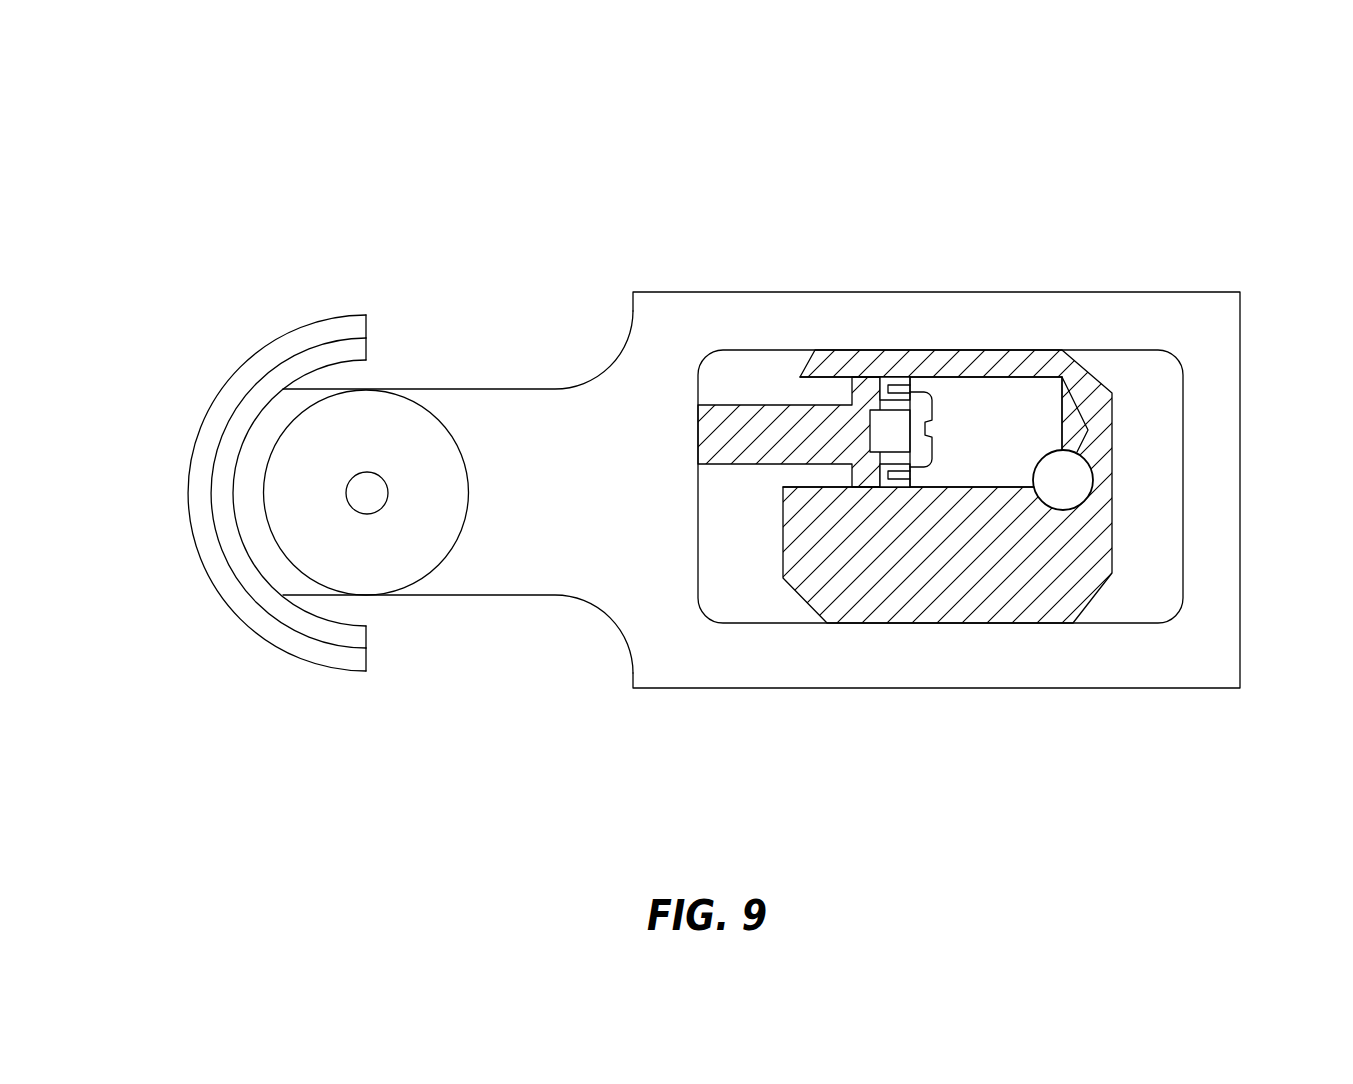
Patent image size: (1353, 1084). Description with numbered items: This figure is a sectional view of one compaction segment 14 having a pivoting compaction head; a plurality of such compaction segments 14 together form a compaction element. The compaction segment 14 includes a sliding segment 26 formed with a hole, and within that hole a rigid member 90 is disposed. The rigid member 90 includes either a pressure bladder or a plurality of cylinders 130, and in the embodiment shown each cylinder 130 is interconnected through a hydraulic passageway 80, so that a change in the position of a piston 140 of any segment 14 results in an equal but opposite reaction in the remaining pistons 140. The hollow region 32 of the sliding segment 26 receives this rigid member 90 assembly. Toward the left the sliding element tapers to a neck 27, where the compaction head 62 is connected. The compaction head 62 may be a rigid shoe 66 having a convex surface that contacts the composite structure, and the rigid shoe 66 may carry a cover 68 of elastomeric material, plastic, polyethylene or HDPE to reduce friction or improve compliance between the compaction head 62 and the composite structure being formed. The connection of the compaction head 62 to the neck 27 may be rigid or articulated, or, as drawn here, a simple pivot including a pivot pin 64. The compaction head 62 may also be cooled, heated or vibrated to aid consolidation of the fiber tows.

The compaction segment 14 is at (709, 436).
The sliding segment 26 is at (1015, 318).
The neck 27 is at (570, 558).
The cavity 32 is at (1130, 377).
The compaction head 62 is at (291, 475).
The pivot pin 64 is at (370, 497).
The rigid shoe 66 is at (347, 350).
The cover 68 is at (260, 365).
The hydraulic passageway 80 is at (1073, 475).
The rigid member 90 is at (1045, 592).
The cylinder 130 is at (988, 455).
The piston 140 is at (745, 418).